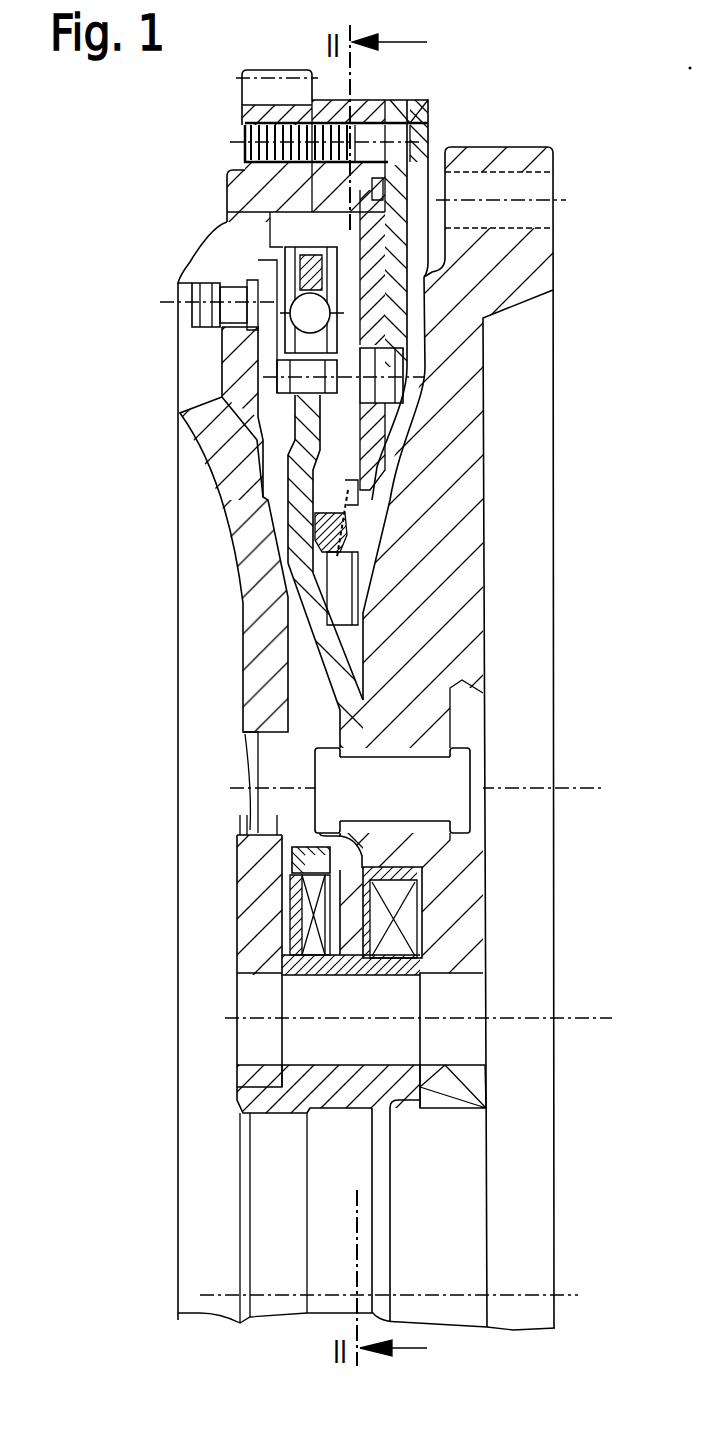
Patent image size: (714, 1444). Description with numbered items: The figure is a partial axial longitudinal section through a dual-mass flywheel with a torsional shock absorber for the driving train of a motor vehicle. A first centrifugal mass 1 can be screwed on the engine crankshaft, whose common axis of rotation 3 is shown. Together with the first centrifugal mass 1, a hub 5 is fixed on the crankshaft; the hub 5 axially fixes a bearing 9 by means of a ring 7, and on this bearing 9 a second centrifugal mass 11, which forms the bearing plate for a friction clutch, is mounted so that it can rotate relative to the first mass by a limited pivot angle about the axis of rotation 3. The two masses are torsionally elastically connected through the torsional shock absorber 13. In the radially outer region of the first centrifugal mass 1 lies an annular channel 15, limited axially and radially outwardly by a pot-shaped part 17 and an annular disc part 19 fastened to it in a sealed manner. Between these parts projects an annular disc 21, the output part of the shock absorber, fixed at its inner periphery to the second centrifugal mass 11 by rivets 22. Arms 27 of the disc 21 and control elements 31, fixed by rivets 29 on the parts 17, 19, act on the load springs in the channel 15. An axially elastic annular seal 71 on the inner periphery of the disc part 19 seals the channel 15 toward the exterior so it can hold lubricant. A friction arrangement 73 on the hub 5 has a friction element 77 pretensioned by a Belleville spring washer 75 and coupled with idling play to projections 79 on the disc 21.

The first centrifugal mass 1 is at (240, 583).
The axis of rotation 3 is at (571, 1293).
The hub 5 is at (255, 1100).
The ring 7 is at (467, 1100).
The bearing 9 is at (443, 905).
The second centrifugal mass 11 is at (527, 257).
The torsional shock absorber 13 is at (272, 353).
The channel 15 is at (272, 464).
The pot-shaped part 17 is at (237, 187).
The annular disc part 19 is at (413, 310).
The disc 21 is at (330, 607).
The rivets 22 is at (443, 772).
The arms 27 is at (275, 268).
The rivets 29 is at (192, 290).
The control elements 31 is at (230, 341).
The axially elastic annular seal 71 is at (356, 521).
The friction arrangement 73 is at (273, 953).
The Belleville spring washer 75 is at (282, 882).
The friction element 77 is at (282, 915).
The projections 79 is at (282, 848).